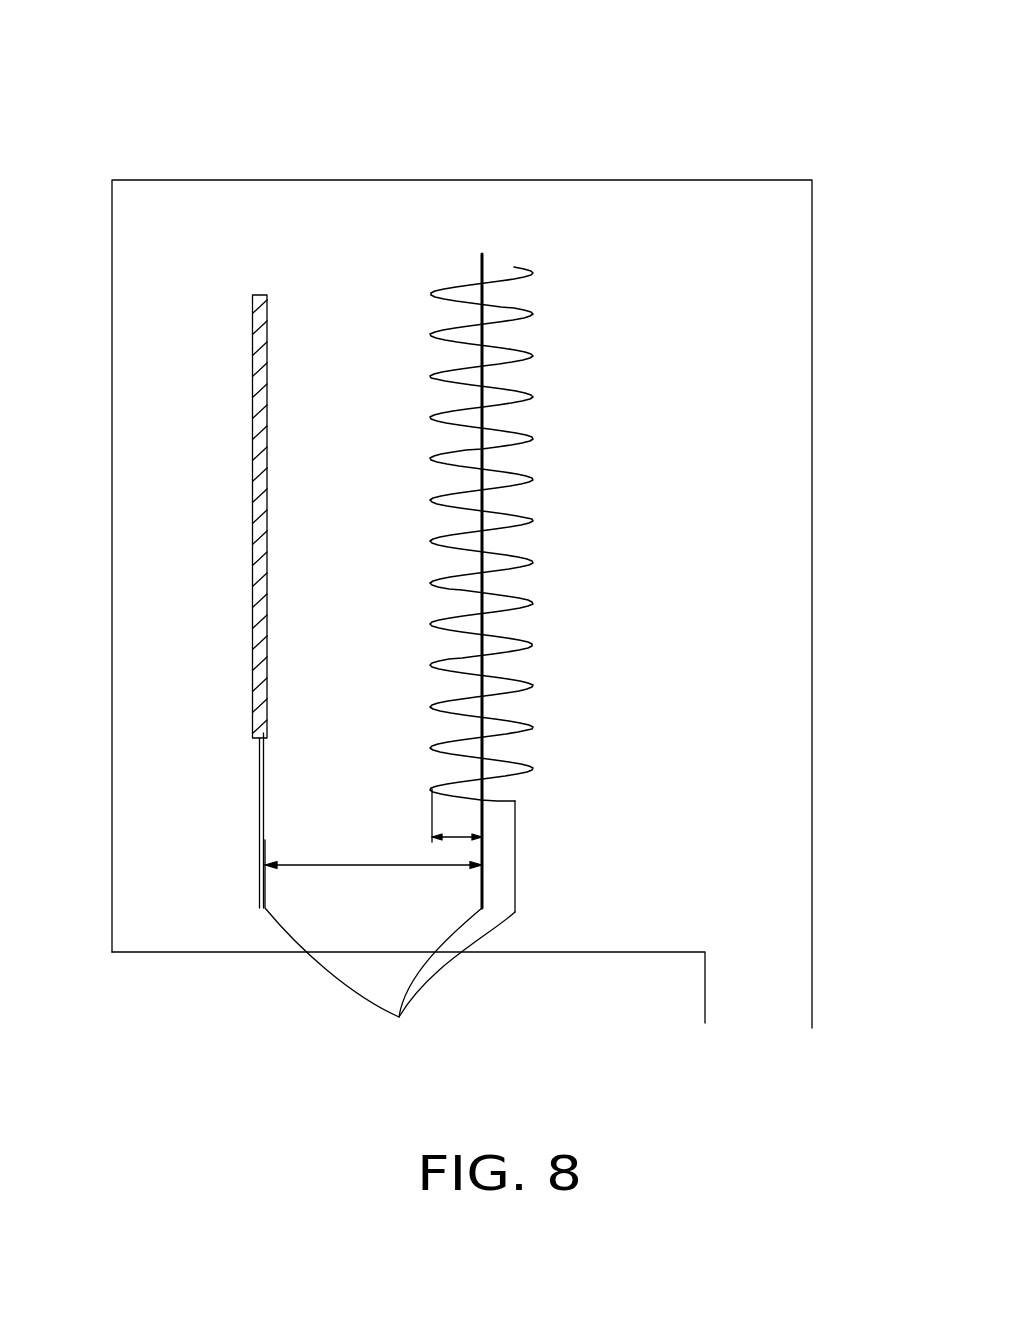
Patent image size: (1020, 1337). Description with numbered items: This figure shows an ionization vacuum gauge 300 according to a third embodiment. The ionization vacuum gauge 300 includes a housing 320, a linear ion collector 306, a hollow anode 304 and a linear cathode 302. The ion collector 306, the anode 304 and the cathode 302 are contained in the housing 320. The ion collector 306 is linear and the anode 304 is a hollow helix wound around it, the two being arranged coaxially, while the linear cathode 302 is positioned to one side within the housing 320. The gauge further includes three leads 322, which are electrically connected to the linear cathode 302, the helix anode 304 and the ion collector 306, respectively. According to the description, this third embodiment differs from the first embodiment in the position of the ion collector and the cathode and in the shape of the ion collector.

The ionization vacuum gauge 300 is at (495, 68).
The linear cathode 302 is at (257, 637).
The hollow anode 304 is at (532, 312).
The linear ion collector 306 is at (482, 261).
The housing 320 is at (812, 842).
The leads 322 is at (390, 931).